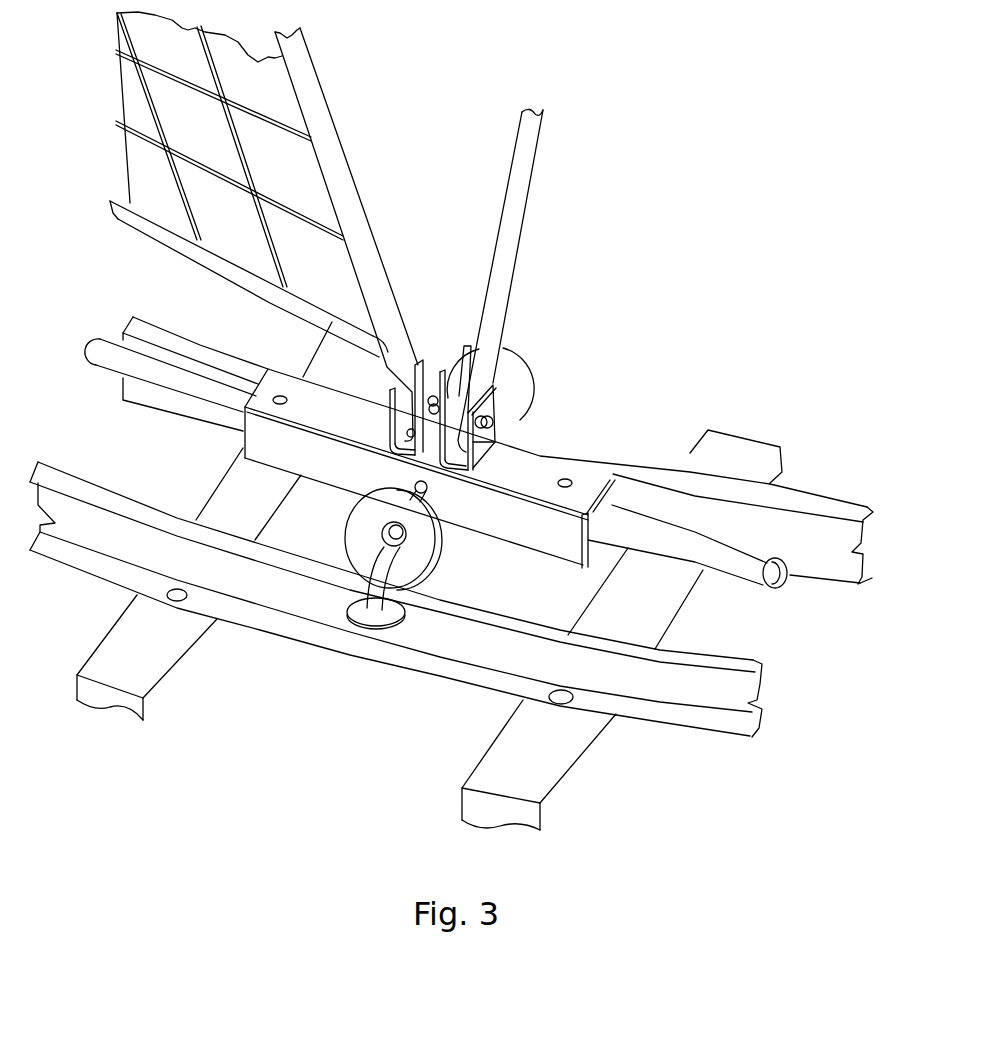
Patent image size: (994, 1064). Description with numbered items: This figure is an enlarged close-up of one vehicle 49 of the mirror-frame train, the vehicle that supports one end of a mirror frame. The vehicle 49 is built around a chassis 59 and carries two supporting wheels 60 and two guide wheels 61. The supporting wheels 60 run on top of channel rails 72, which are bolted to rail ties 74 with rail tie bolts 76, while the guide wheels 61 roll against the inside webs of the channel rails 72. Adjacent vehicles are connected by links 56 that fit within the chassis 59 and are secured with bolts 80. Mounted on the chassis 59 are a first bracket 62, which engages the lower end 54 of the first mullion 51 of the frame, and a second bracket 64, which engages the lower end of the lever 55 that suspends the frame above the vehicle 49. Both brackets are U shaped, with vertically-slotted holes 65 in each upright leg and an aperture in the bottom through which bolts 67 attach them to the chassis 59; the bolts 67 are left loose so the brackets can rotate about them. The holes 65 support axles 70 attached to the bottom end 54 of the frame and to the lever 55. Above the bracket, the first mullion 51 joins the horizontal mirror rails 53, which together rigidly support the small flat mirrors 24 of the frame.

The mirrors 24 is at (327, 262).
The vehicle 49 is at (557, 447).
The first mullion 51 is at (340, 173).
The mirror rails 53 is at (278, 118).
The lower end of first mullion 54 is at (392, 388).
The lever 55 is at (520, 252).
The links 56 is at (743, 557).
The chassis 59 is at (595, 473).
The supporting wheels 60 is at (512, 373).
The guide wheels 61 is at (362, 608).
The first bracket 62 is at (440, 370).
The second bracket 64 is at (491, 407).
The vertically-slotted holes 65 is at (496, 417).
The bolts 67 is at (390, 452).
The axles 70 is at (496, 421).
The channel rails 72 is at (712, 698).
The rail ties 74 is at (540, 770).
The rail tie bolts 76 is at (550, 702).
The bolts 80 is at (567, 480).